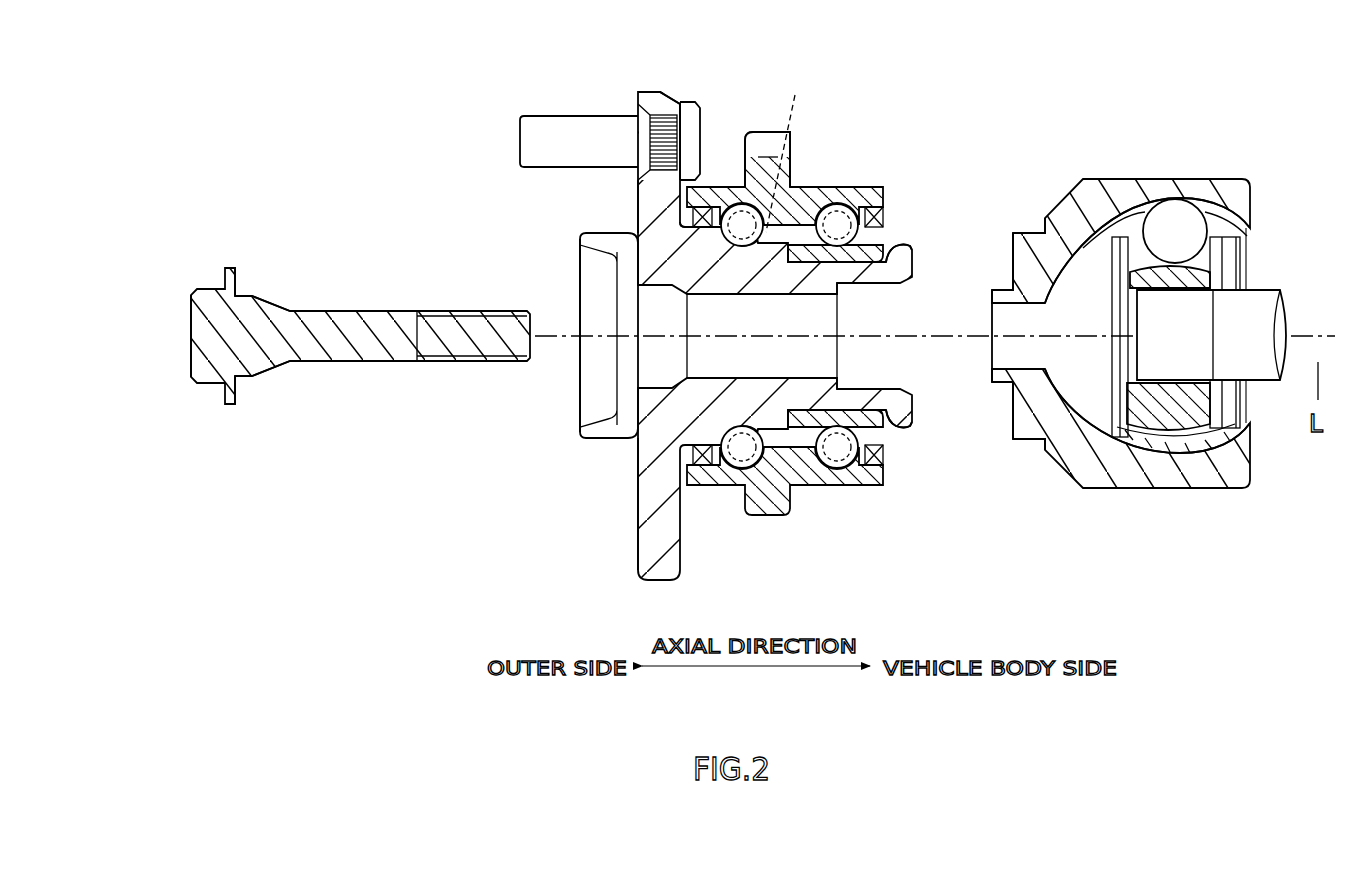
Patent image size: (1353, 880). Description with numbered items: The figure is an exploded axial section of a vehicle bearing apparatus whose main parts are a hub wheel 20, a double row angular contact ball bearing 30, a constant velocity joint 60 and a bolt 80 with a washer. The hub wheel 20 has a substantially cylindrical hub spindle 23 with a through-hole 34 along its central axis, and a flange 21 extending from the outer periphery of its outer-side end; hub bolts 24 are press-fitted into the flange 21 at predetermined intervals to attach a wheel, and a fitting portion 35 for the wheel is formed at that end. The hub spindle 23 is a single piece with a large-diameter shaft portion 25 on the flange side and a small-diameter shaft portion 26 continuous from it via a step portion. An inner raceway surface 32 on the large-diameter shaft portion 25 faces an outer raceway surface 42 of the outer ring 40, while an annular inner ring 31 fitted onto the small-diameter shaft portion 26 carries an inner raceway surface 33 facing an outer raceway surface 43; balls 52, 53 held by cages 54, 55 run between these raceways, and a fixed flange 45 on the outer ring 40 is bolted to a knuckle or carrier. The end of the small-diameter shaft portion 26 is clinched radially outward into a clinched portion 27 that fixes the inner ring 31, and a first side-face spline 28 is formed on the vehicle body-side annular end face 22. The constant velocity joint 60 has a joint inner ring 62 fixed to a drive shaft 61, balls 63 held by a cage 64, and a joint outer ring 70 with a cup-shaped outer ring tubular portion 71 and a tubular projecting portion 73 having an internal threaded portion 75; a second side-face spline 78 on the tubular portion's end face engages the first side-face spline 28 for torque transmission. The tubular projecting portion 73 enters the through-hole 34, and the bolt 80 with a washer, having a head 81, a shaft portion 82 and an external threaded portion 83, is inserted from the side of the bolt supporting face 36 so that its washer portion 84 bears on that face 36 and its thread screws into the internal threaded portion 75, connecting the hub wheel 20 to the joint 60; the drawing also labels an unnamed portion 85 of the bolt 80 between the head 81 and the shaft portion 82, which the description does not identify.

The hub wheel 20 is at (634, 462).
The flange 21 is at (652, 92).
The annular end face 22 is at (899, 254).
The hub spindle 23 is at (703, 187).
The hub bolt 24 is at (570, 128).
The large-diameter shaft portion 25 is at (805, 232).
The small-diameter shaft portion 26 is at (816, 220).
The clinched portion 27 is at (906, 445).
The first side-face spline 28 is at (915, 425).
The double row angular contact ball bearing 30 is at (940, 186).
The inner ring 31 is at (902, 240).
The inner raceway surface 32 is at (728, 465).
The inner raceway surface 33 is at (855, 466).
The through-hole 34 is at (625, 450).
The fitting portion 35 is at (578, 432).
The bolt supporting face 36 is at (612, 265).
The outer ring 40 is at (878, 188).
The outer raceway surface 42 is at (760, 445).
The outer raceway surface 43 is at (832, 470).
The fixed flange 45 is at (763, 130).
The balls 52 is at (722, 207).
The balls 53 is at (868, 200).
The cage 54 is at (789, 147).
The cage 55 is at (832, 205).
The constant velocity joint 60 is at (1130, 178).
The drive shaft 61 is at (1262, 303).
The joint inner ring 62 is at (1180, 283).
The balls 63 is at (1175, 215).
The cage 64 is at (1212, 457).
The joint outer ring 70 is at (1110, 488).
The outer ring tubular portion 71 is at (1190, 486).
The tubular projecting portion 73 is at (1000, 290).
The internal threaded portion 75 is at (1000, 312).
The second side-face spline 78 is at (1010, 440).
The bolt with a washer 80 is at (188, 383).
The head 81 is at (200, 320).
The shaft portion 82 is at (337, 340).
The external threaded portion 83 is at (462, 311).
The washer portion 84 is at (228, 405).
The shoulder 85 is at (338, 310).